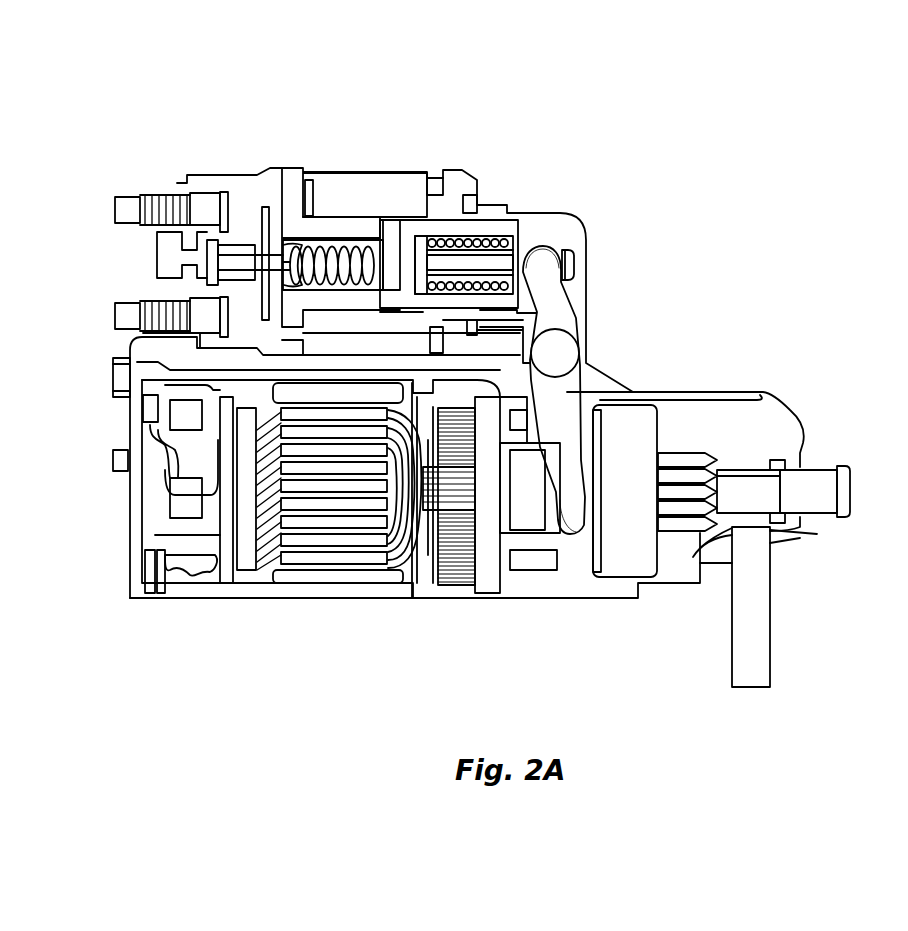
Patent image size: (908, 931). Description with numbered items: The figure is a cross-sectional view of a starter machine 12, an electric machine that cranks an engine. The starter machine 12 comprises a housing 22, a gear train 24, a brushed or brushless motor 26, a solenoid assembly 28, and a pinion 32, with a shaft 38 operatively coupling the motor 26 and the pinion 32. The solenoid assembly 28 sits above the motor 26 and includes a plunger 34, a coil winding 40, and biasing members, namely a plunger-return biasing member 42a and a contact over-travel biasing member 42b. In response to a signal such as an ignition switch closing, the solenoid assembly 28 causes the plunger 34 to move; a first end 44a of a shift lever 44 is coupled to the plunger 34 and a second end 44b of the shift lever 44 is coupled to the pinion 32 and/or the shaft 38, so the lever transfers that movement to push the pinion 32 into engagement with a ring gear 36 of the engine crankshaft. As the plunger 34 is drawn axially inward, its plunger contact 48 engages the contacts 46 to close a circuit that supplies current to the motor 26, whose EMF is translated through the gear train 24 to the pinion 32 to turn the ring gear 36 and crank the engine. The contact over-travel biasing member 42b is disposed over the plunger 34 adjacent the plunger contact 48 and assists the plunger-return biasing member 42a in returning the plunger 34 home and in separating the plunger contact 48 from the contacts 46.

The starter machine 12 is at (660, 118).
The housing 22 is at (683, 392).
The gear train 24 is at (452, 590).
The motor 26 is at (330, 545).
The solenoid assembly 28 is at (516, 163).
The pinion 32 is at (700, 453).
The plunger 34 is at (574, 258).
The ring gear 36 is at (772, 652).
The shaft 38 is at (747, 477).
The coil winding 40 is at (375, 197).
The plunger-return biasing member 42a is at (495, 245).
The contact over-travel biasing member 42b is at (322, 240).
The shift lever 44 is at (583, 412).
The first end of shift lever 44a is at (553, 260).
The second end of shift lever 44b is at (575, 500).
The contacts 46 is at (220, 307).
The plunger contact 48 is at (268, 205).